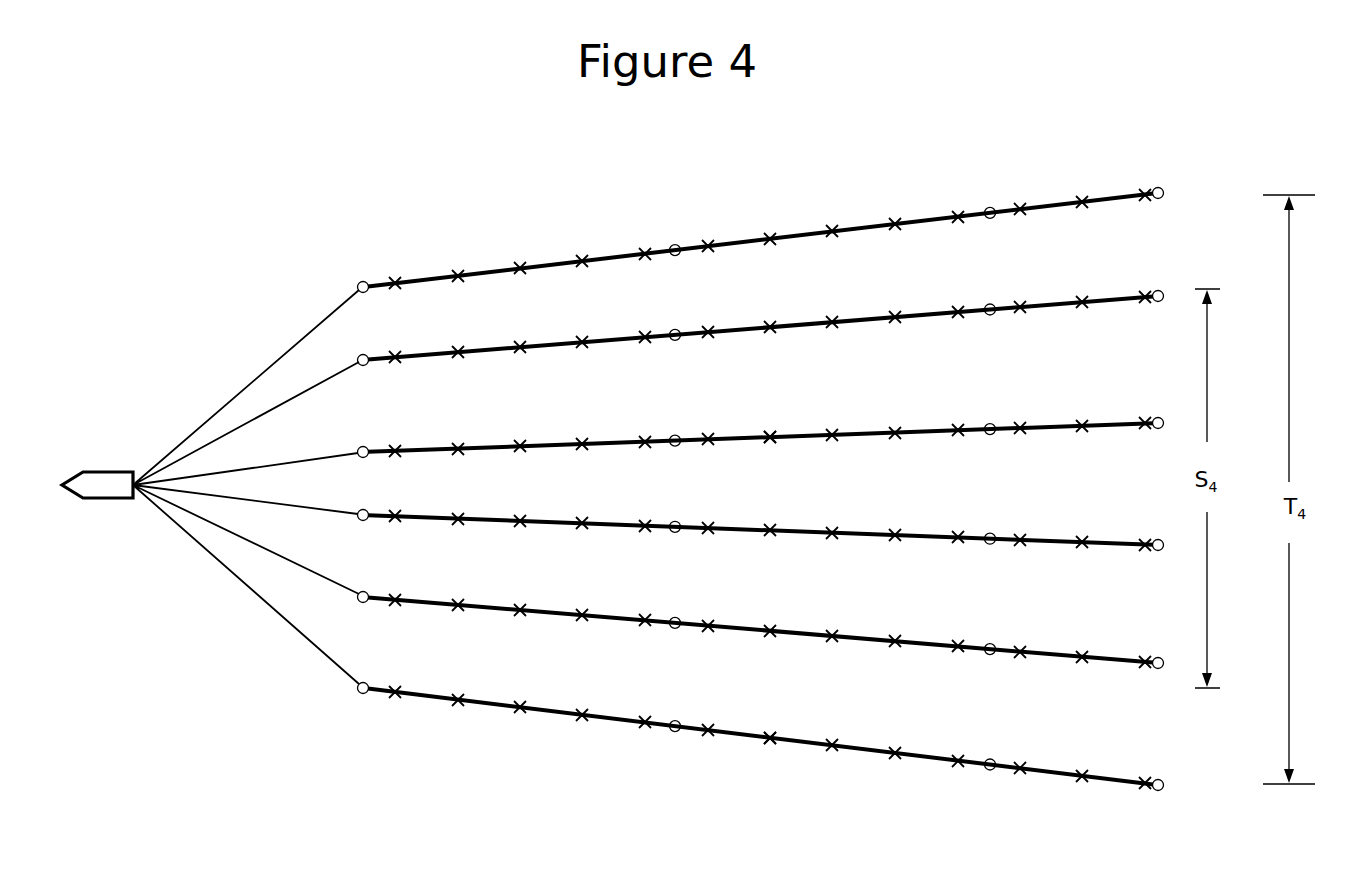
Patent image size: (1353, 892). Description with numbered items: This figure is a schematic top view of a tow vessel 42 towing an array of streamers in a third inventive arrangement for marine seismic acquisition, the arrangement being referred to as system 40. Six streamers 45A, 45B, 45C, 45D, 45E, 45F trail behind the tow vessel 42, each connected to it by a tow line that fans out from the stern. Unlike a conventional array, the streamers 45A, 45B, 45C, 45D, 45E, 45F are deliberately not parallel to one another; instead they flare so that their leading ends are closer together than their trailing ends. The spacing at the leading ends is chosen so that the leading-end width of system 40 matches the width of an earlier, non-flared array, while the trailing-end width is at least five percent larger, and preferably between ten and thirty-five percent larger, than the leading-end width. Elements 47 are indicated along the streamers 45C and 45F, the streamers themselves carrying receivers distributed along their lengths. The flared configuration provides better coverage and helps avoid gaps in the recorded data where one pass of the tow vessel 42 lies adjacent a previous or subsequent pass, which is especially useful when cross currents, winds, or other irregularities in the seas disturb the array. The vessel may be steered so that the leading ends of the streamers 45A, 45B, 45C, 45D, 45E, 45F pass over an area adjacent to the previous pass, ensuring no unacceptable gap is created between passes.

The system 40 is at (322, 198).
The tow vessel 42 is at (95, 483).
The streamer 45A is at (483, 272).
The streamer 45B is at (498, 345).
The streamer 45C is at (492, 445).
The streamer 45D is at (555, 523).
The streamer 45E is at (545, 610).
The streamer 45F is at (485, 700).
The seismic receiver 47 is at (775, 430).